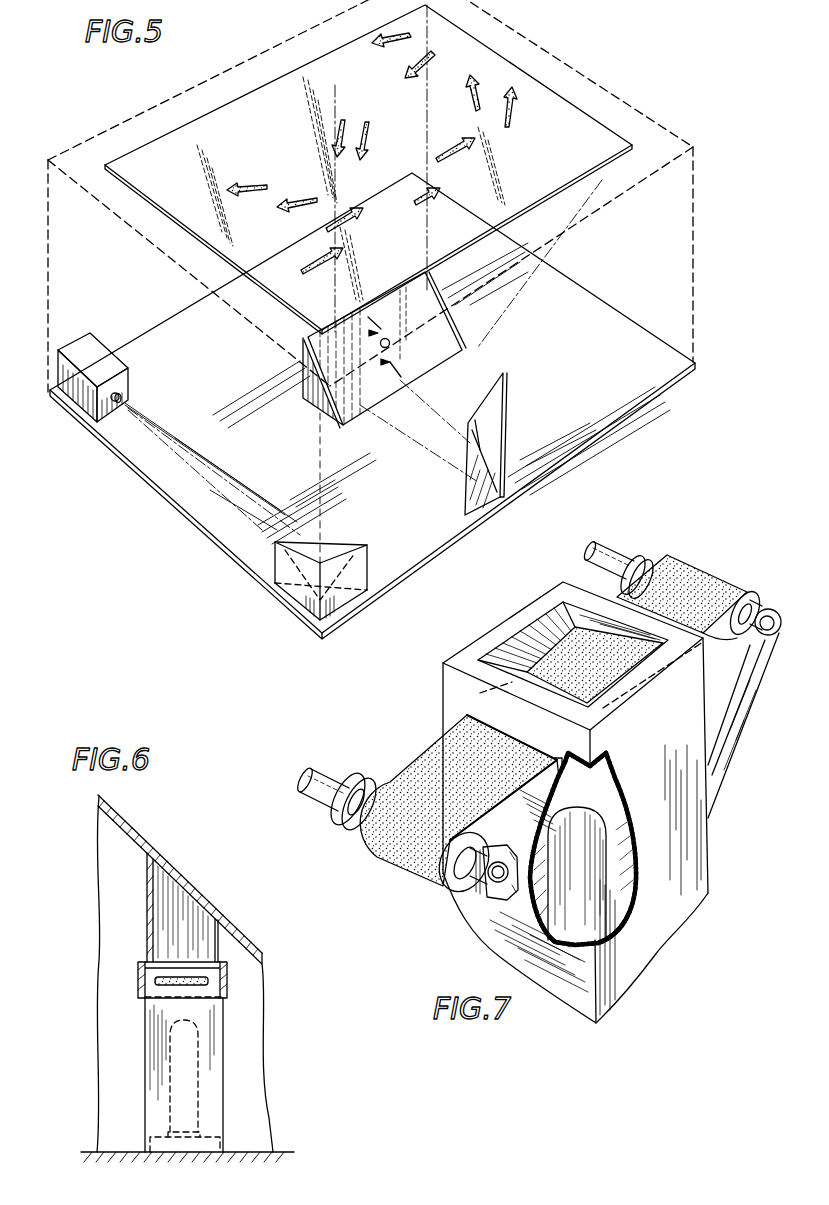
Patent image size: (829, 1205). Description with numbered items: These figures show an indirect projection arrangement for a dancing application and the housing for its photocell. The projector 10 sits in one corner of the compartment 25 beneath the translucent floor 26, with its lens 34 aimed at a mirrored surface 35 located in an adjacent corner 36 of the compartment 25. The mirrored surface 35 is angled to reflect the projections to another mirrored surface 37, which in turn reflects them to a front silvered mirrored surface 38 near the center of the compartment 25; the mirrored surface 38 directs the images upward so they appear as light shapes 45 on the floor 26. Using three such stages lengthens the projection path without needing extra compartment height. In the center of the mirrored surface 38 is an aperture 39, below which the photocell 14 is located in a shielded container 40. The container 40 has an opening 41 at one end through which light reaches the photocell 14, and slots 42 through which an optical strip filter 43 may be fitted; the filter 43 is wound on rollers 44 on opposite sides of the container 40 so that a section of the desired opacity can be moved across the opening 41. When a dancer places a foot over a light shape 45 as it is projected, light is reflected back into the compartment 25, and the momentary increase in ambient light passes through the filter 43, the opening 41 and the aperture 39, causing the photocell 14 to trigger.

In FIG. 5, the projector 10 is at (93, 338).
In FIG. 6, the photocell 14 is at (198, 1073).
In FIG. 7, the photocell 14 is at (583, 812).
In FIG. 5, the compartment 25 is at (66, 281).
In FIG. 5, the floor 26 is at (271, 78).
In FIG. 5, the lens 34 is at (121, 396).
In FIG. 5, the mirrored surface 35 is at (312, 557).
In FIG. 5, the adjacent corner 36 is at (312, 622).
In FIG. 5, the mirrored surface 37 is at (480, 490).
In FIG. 5, the mirrored surface 38 is at (435, 349).
In FIG. 6, the mirrored surface 38 is at (133, 831).
In FIG. 5, the aperture 39 is at (392, 343).
In FIG. 6, the aperture 39 is at (190, 891).
In FIG. 6, the container 40 is at (224, 1043).
In FIG. 7, the container 40 is at (695, 835).
In FIG. 7, the opening 41 is at (522, 652).
In FIG. 6, the slots 42 is at (202, 977).
In FIG. 7, the slots 42 is at (467, 713).
In FIG. 7, the optical strip filter 43 is at (659, 579).
In FIG. 7, the rollers 44 is at (447, 890).
In FIG. 5, the light shape 45 is at (507, 125).